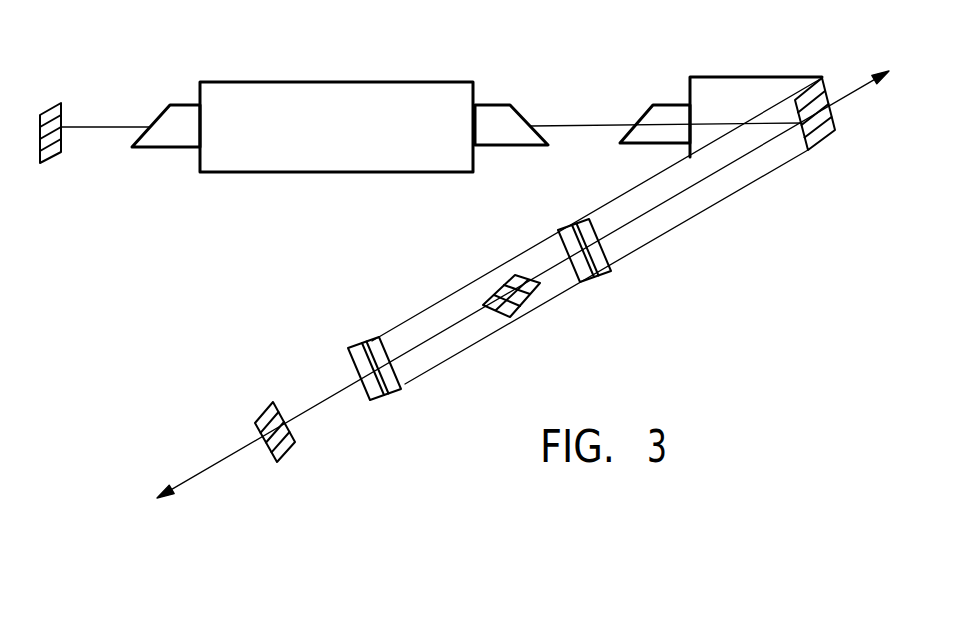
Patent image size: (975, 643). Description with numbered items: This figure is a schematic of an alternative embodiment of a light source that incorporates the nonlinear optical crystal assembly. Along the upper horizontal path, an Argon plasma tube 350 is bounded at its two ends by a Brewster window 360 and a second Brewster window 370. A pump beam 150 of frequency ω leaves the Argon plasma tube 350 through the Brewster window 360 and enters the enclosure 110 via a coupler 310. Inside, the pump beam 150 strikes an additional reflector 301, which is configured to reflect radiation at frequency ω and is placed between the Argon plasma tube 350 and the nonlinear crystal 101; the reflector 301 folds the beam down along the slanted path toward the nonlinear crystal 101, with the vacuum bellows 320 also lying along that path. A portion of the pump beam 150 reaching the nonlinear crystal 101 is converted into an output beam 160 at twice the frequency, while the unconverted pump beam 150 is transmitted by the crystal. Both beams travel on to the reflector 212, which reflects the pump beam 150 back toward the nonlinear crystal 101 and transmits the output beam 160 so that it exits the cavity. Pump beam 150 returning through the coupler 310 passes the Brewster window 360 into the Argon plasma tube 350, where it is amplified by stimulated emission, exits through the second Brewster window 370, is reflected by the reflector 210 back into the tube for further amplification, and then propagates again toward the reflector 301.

The nonlinear crystal 101 is at (522, 310).
The enclosure 110 is at (727, 195).
The pump beam 150 is at (105, 125).
The output beam 160 is at (867, 90).
The reflector 210 is at (47, 102).
The reflector 212 is at (268, 447).
The additional reflector 301 is at (822, 78).
The coupler 310 is at (637, 123).
The vacuum bellows 320 is at (367, 335).
The Argon plasma tube 350 is at (352, 80).
The Brewster window 360 is at (533, 125).
The second Brewster window 370 is at (148, 127).